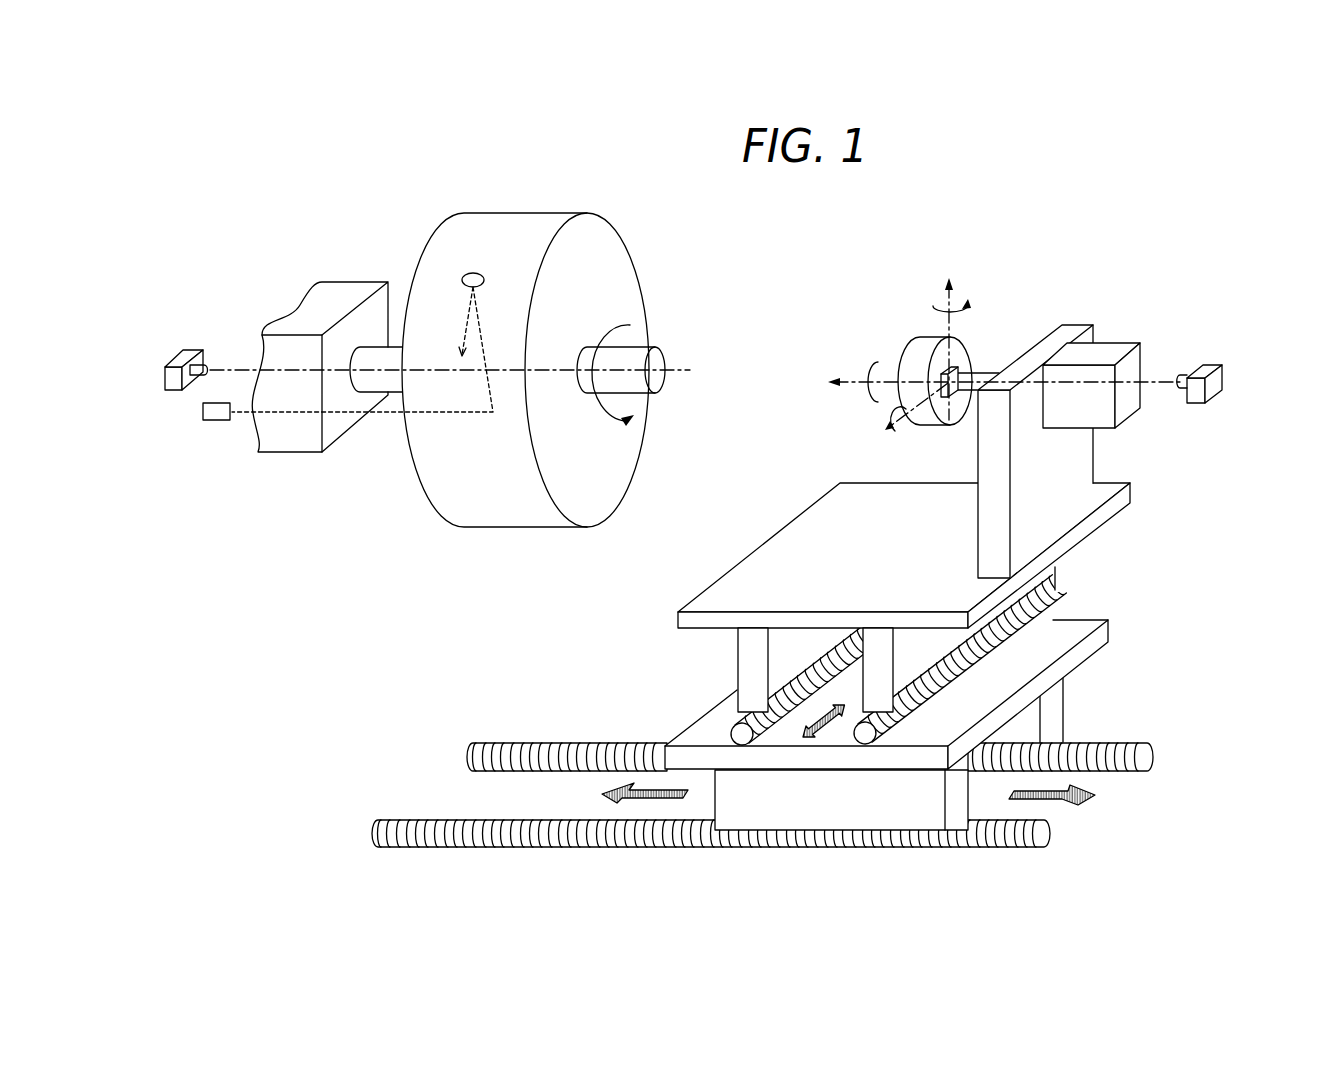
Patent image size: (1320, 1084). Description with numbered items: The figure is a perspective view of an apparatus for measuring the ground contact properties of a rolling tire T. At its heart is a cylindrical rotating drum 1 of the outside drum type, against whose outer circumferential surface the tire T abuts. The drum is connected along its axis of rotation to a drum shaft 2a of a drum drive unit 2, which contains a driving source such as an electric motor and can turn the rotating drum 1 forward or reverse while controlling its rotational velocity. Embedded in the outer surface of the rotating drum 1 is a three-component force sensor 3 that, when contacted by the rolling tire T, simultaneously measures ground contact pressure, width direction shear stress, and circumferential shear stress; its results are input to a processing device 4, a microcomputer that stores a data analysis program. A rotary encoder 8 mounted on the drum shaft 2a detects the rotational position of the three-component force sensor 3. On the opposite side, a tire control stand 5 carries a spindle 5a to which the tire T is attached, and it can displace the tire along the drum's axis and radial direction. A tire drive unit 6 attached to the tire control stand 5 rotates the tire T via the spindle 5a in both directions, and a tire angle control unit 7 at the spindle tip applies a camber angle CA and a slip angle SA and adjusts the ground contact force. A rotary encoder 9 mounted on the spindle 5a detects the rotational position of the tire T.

The rotating drum 1 is at (608, 243).
The drum drive unit 2 is at (320, 309).
The drum shaft 2a is at (375, 355).
The three-component force sensor 3 is at (468, 274).
The processing device 4 is at (216, 423).
The tire control stand 5 is at (1132, 296).
The spindle 5a is at (983, 374).
The tire drive unit 6 is at (1123, 348).
The tire angle control unit 7 is at (947, 398).
The rotary encoder 8 is at (185, 351).
The rotary encoder 9 is at (1210, 392).
The tire T is at (898, 349).
The camber angle CA is at (938, 349).
The slip angle SA is at (902, 397).